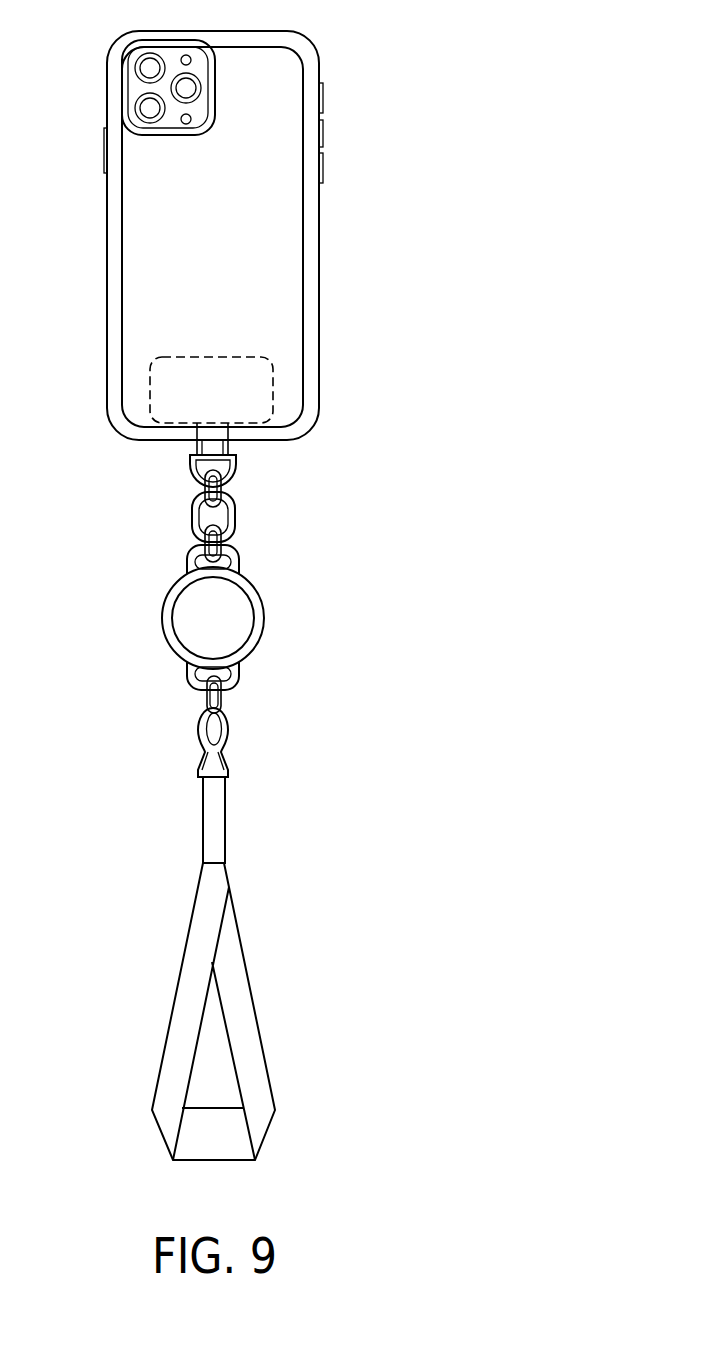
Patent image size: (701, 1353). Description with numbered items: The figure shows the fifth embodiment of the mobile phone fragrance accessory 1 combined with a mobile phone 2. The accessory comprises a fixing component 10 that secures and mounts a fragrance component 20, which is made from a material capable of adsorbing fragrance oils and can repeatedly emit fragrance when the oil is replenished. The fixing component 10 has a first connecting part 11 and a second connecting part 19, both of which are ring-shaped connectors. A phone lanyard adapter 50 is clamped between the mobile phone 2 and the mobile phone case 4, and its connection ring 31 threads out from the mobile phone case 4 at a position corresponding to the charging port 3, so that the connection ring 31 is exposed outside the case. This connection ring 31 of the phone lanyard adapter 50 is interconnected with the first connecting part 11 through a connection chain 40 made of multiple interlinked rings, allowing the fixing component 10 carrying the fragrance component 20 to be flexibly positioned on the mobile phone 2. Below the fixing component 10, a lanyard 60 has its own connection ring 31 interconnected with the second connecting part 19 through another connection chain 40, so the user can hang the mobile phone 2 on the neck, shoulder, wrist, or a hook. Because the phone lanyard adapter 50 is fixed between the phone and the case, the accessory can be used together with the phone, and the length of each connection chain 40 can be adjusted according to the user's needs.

The mobile phone fragrance accessory 1 is at (215, 606).
The mobile phone 2 is at (245, 231).
The charging port 3 is at (233, 446).
The mobile phone case 4 is at (310, 300).
The fixing component 10 is at (253, 597).
The first connecting part 11 is at (190, 557).
The second connecting part 19 is at (238, 678).
The fragrance component 20 is at (207, 635).
The connection ring 31 is at (190, 480).
The connection chain 40 is at (237, 517).
The phone lanyard adapter 50 is at (273, 393).
The lanyard 60 is at (252, 987).